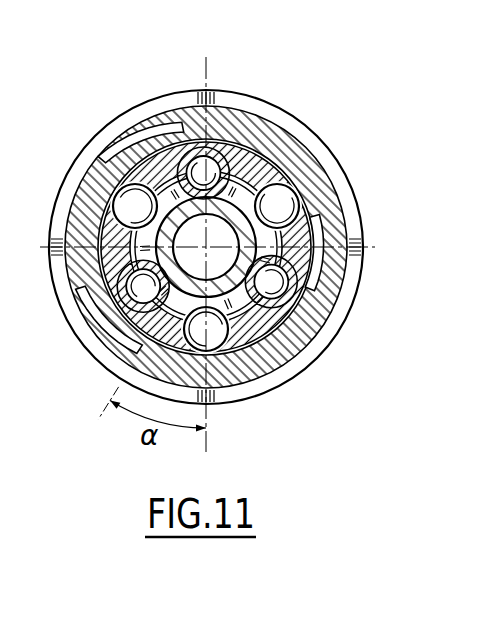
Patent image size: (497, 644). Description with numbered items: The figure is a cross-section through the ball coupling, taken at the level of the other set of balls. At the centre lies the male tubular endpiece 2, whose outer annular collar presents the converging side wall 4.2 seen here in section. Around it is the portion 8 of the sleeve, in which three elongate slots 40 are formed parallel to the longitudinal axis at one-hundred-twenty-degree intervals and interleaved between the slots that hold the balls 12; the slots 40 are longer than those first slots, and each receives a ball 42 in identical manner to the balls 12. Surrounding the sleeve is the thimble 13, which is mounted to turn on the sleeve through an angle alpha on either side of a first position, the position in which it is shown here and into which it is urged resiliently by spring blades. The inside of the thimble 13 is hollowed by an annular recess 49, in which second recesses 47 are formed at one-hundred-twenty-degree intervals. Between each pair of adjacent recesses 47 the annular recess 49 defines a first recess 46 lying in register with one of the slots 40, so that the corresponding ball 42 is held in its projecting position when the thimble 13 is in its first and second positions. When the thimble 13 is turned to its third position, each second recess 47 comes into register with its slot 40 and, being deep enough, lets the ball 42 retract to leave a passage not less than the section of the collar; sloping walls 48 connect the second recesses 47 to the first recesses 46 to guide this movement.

The male tubular endpiece 2 is at (268, 172).
The portion of the sleeve 8 is at (209, 124).
The ball 12 is at (276, 322).
The thimble 13 is at (326, 298).
The elongate slot 40 is at (315, 140).
The ball 42 is at (113, 212).
The first recess 46 is at (97, 136).
The second recess 47 is at (167, 103).
The sloping wall 48 is at (139, 142).
The annular recess 49 is at (86, 294).
The converging side wall 4.2 is at (313, 221).